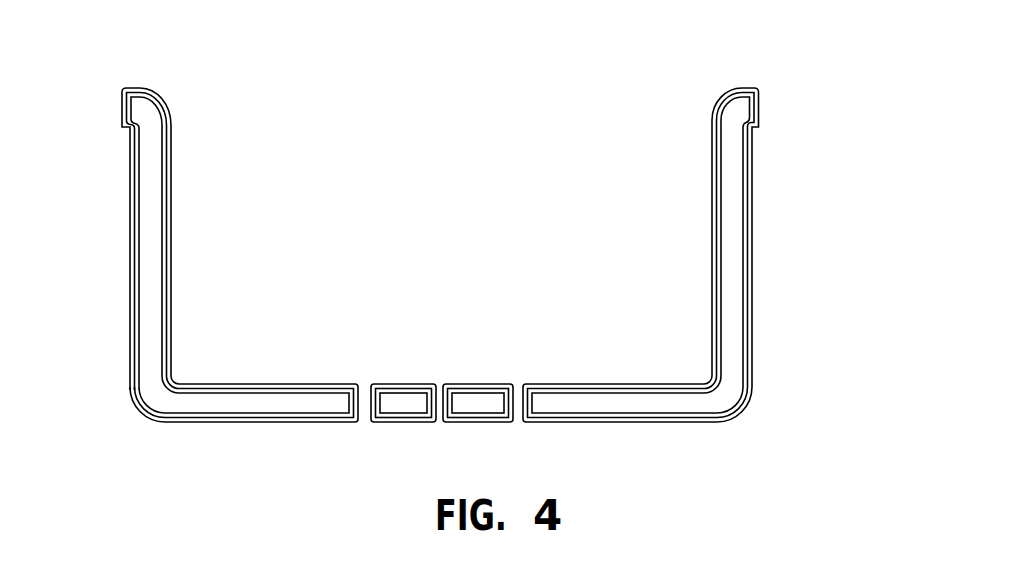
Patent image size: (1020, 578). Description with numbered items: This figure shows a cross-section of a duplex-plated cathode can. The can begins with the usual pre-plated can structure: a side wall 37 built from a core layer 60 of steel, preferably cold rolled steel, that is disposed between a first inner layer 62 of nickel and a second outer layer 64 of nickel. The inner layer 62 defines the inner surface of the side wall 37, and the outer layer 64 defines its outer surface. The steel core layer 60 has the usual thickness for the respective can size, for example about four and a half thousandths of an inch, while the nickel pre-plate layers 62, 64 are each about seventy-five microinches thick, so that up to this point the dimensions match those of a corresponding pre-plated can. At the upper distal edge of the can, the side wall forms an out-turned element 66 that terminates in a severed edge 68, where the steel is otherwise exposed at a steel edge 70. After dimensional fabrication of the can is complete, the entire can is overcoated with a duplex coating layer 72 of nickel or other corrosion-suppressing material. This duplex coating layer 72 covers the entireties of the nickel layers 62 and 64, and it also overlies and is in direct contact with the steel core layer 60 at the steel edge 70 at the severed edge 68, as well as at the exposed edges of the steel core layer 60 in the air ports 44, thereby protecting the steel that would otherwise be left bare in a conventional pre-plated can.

The side wall 37 is at (492, 253).
The air ports 44 is at (513, 423).
The core layer 60 is at (679, 223).
The first inner layer 62 is at (718, 182).
The second outer layer 64 is at (745, 212).
The out-turned element 66 is at (716, 91).
The severed edge 68 is at (363, 428).
The steel edge 70 is at (358, 398).
The duplex coating layer 72 is at (173, 306).